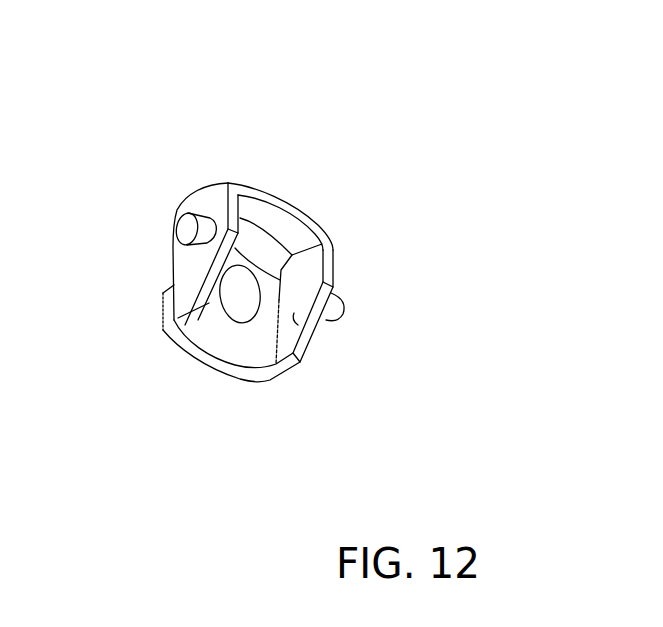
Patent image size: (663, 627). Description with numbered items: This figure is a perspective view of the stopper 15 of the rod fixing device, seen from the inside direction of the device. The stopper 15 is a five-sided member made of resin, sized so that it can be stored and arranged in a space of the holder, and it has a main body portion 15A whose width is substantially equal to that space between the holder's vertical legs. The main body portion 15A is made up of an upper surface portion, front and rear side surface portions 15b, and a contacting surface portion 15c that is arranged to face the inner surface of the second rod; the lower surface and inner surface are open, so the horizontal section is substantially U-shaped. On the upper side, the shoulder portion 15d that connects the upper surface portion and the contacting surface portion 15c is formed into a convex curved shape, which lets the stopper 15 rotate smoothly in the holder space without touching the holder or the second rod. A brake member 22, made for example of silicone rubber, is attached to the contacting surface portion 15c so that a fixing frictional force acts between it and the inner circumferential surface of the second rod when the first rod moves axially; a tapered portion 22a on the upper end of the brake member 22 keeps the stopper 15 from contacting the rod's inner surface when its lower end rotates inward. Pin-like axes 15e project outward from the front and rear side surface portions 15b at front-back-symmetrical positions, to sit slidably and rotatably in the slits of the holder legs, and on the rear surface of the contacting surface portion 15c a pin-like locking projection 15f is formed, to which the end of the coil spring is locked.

The stopper 15 is at (347, 137).
The main body portion 15A is at (338, 244).
The front and rear side surface portions 15b is at (188, 253).
The contacting surface portion 15c is at (267, 370).
The shoulder portion 15d is at (204, 190).
The pin-like axes 15e is at (185, 222).
The locking projection 15f is at (243, 290).
The brake member 22 is at (170, 348).
The tapered portion 22a is at (164, 293).